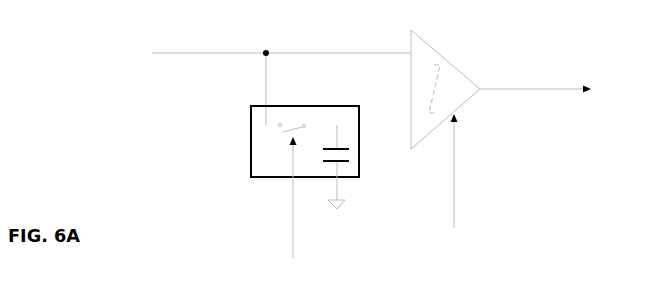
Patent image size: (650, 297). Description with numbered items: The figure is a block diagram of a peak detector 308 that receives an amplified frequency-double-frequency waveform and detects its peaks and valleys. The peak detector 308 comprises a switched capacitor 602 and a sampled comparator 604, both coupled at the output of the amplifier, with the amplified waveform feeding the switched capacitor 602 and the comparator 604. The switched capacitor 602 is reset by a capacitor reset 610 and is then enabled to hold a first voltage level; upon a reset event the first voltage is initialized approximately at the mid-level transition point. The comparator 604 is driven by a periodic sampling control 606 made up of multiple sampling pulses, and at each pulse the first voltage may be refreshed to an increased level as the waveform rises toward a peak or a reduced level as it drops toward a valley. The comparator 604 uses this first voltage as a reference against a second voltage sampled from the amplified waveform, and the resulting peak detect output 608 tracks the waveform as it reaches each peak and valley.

The peak detector 308 is at (325, 138).
The switched capacitor 602 is at (327, 106).
The sampled comparator 604 is at (421, 38).
The periodic sampling control 606 is at (512, 188).
The peak detect output 608 is at (574, 68).
The capacitor reset 610 is at (268, 218).